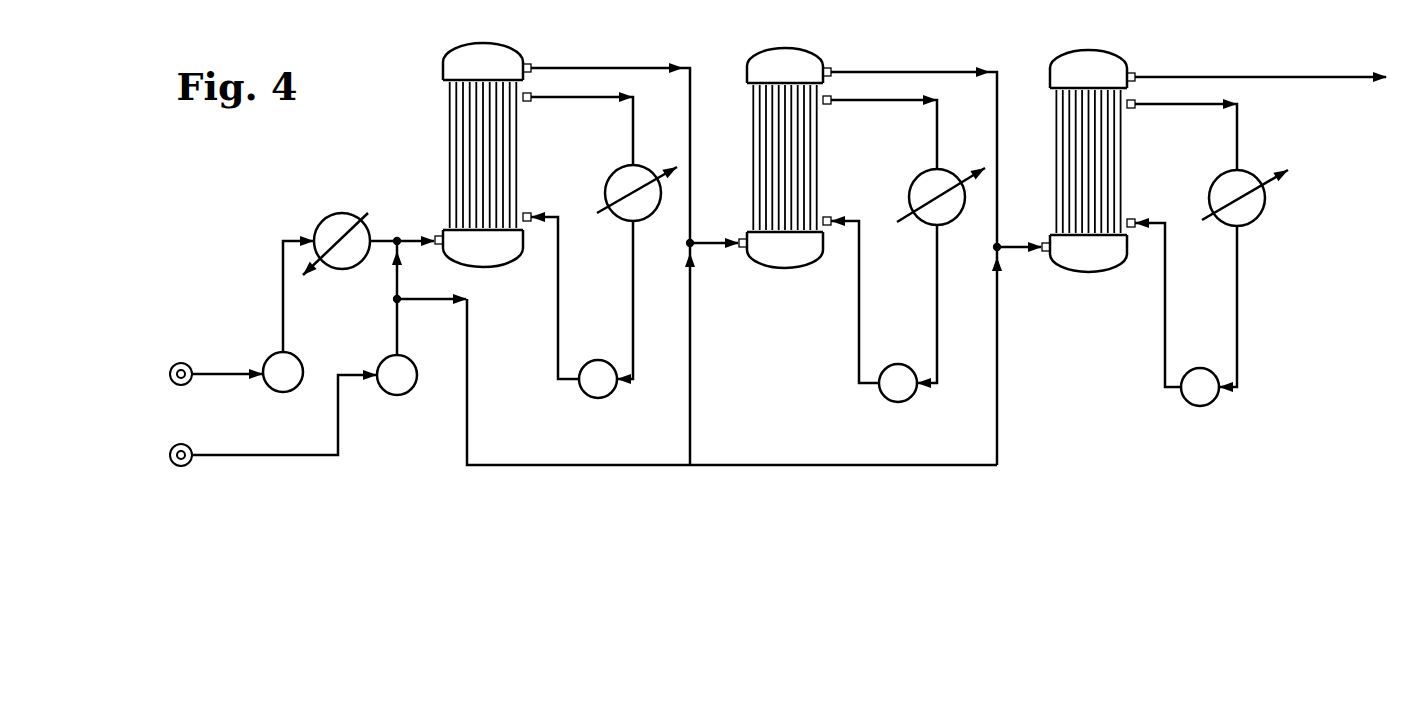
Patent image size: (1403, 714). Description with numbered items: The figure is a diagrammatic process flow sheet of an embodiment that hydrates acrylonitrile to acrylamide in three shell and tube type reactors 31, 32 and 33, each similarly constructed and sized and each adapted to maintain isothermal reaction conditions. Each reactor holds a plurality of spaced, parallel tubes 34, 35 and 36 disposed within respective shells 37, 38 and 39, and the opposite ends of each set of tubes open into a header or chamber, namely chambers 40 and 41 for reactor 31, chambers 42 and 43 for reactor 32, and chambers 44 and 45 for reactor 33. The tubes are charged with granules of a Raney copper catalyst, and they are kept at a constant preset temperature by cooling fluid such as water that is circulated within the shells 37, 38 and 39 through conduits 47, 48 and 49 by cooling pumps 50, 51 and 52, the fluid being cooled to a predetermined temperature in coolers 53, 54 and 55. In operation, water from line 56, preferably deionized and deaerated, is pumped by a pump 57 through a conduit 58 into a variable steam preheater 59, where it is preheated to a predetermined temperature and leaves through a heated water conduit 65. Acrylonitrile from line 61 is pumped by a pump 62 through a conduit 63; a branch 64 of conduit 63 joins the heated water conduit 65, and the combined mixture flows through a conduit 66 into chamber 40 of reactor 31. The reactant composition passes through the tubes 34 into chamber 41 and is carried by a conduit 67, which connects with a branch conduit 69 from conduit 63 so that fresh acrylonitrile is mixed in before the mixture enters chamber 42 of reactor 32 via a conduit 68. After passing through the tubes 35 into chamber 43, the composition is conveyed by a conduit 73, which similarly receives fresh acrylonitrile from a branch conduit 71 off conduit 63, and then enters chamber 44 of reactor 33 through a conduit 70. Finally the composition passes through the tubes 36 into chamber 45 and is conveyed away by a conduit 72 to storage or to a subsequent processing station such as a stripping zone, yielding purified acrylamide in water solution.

The shell and tube type reactor 31 is at (481, 155).
The shell and tube type reactor 32 is at (791, 157).
The shell and tube type reactor 33 is at (1091, 161).
The tubes 34 is at (465, 153).
The tubes 35 is at (770, 158).
The tubes 36 is at (1075, 168).
The shell 37 is at (524, 165).
The shell 38 is at (826, 165).
The shell 39 is at (1130, 167).
The chamber 40 is at (500, 257).
The chamber 41 is at (452, 55).
The chamber 42 is at (796, 263).
The chamber 43 is at (762, 62).
The chamber 44 is at (1098, 268).
The chamber 45 is at (1068, 60).
The conduit 47 is at (559, 342).
The conduit 48 is at (860, 348).
The conduit 49 is at (1167, 352).
The cooling pump 50 is at (594, 392).
The cooling pump 51 is at (890, 396).
The cooling pump 52 is at (1195, 406).
The cooler 53 is at (622, 216).
The cooler 54 is at (930, 218).
The cooler 55 is at (1230, 220).
The line 56 is at (213, 372).
The pump 57 is at (283, 392).
The conduit 58 is at (284, 330).
The variable steam preheater 59 is at (330, 215).
The line 61 is at (276, 457).
The pump 62 is at (395, 390).
The conduit 63 is at (399, 340).
The branch 64 is at (400, 290).
The heated water conduit 65 is at (378, 240).
The conduit 66 is at (408, 241).
The conduit 67 is at (603, 67).
The conduit 68 is at (704, 243).
The branch conduit 69 is at (692, 398).
The conduit 70 is at (1010, 247).
The branch conduit 71 is at (999, 415).
The conduit 72 is at (1240, 77).
The conduit 73 is at (898, 72).